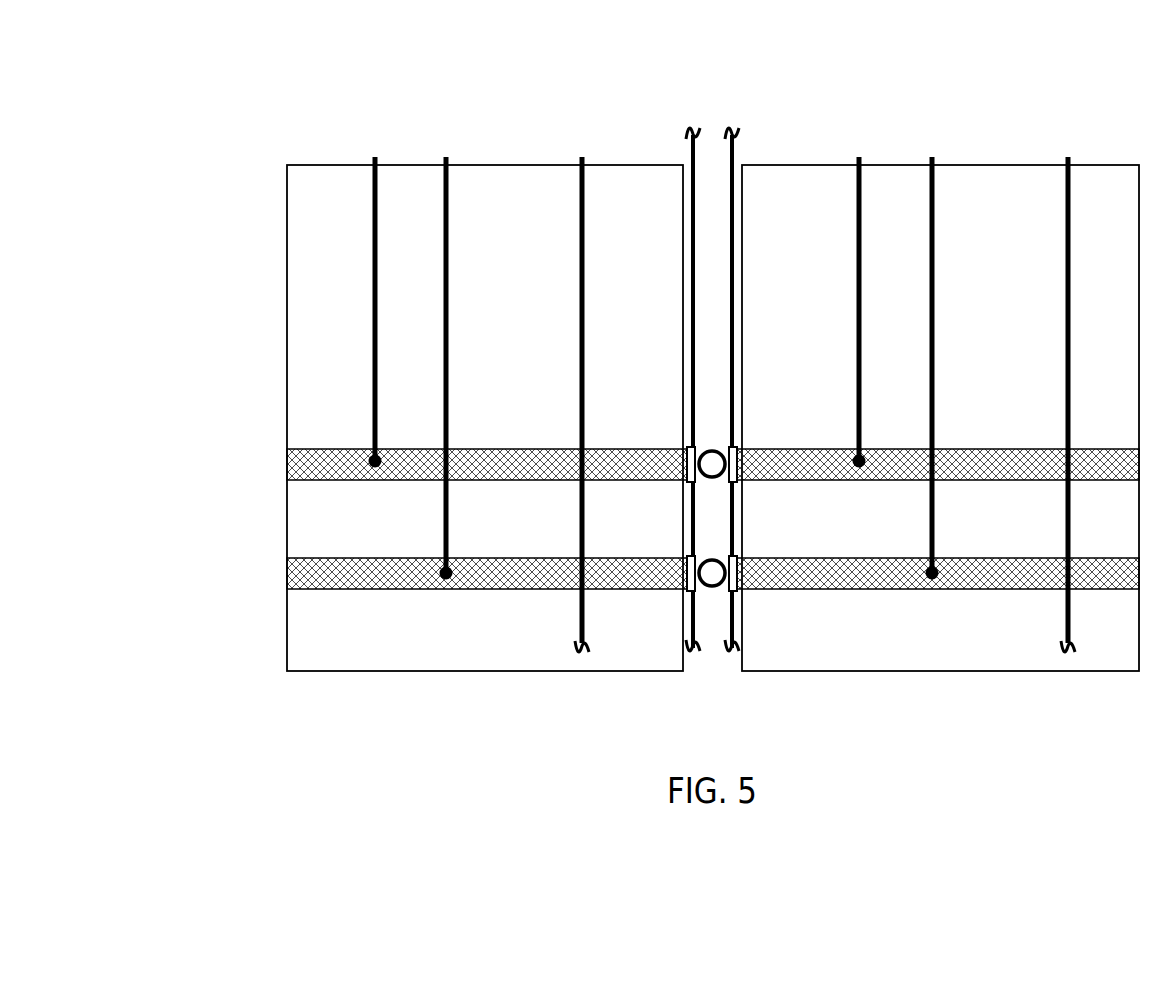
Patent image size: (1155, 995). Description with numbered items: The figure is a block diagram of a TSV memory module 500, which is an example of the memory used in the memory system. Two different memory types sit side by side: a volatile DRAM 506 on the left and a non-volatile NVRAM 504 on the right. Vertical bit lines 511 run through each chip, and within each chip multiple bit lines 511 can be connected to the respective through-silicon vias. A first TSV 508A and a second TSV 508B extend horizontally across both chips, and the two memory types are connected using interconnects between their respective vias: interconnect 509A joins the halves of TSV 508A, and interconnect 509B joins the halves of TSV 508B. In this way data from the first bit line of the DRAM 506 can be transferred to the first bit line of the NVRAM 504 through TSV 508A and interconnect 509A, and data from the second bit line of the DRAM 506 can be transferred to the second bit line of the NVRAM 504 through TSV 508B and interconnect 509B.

The TSV memory module 500 is at (661, 126).
The NVRAM 504 is at (1013, 251).
The DRAM 506 is at (528, 246).
The TSV 508A is at (270, 463).
The TSV 508B is at (270, 571).
The interconnect 509A is at (717, 480).
The interconnect 509B is at (717, 554).
The bit lines 511 is at (368, 120).